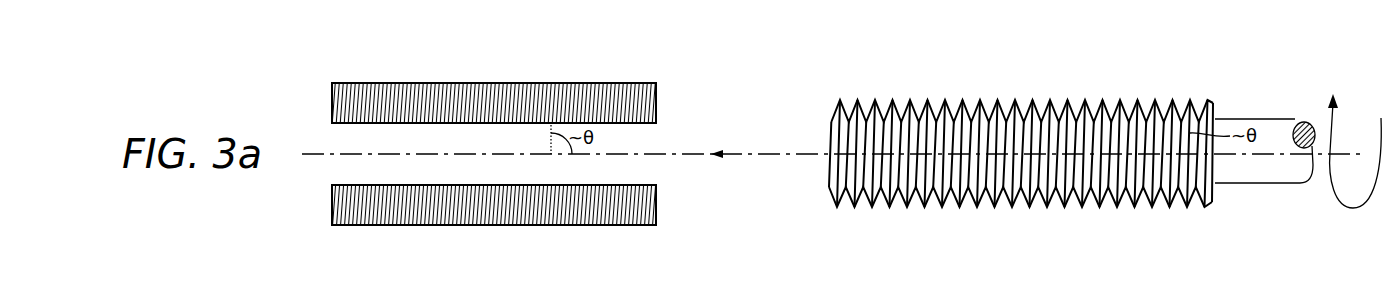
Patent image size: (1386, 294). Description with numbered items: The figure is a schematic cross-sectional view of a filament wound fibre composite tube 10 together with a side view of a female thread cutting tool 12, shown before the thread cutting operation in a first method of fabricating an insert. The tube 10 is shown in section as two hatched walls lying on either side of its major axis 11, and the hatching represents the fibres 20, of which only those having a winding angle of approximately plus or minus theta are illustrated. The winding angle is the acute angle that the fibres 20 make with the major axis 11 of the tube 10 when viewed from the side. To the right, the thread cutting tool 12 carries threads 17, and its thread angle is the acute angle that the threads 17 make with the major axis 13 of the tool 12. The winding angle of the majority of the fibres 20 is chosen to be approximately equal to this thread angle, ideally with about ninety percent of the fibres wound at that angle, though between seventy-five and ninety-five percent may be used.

The filament wound fibre composite tube 10 is at (656, 83).
The fibres 20 is at (656, 205).
The major axis 11 is at (314, 153).
The thread cutting tool 12 is at (1258, 183).
The major axis 13 is at (1270, 150).
The threads 17 is at (1203, 203).